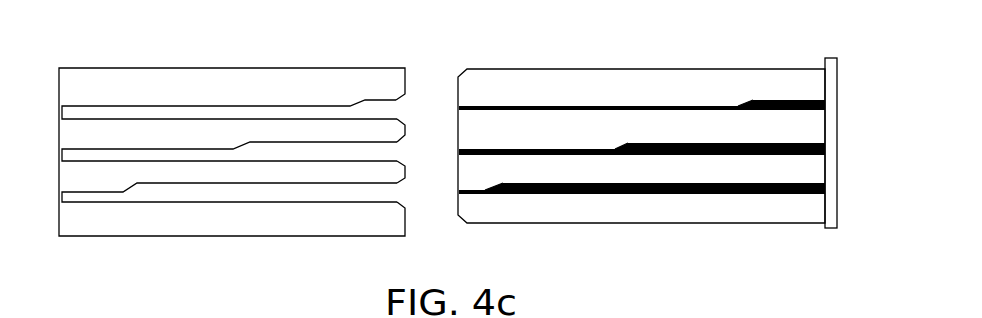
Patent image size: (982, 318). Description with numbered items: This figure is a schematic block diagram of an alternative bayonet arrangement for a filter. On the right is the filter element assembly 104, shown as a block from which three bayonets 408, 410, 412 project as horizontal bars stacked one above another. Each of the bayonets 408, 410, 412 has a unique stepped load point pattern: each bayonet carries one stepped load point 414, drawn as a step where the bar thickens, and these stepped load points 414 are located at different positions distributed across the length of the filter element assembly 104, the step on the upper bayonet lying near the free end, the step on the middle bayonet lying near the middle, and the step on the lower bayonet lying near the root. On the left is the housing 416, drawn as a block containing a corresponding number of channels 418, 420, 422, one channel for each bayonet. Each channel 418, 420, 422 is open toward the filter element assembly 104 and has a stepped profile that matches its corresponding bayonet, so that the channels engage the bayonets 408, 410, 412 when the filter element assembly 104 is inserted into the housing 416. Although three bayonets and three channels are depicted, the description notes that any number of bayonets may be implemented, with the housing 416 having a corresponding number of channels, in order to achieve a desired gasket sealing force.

The filter element assembly 104 is at (643, 38).
The bayonet 408 is at (677, 103).
The bayonet 410 is at (677, 141).
The bayonet 412 is at (677, 183).
The stepped load point 414 is at (747, 92).
The housing 416 is at (204, 68).
The channel 418 is at (429, 99).
The channel 420 is at (429, 140).
The channel 422 is at (429, 184).